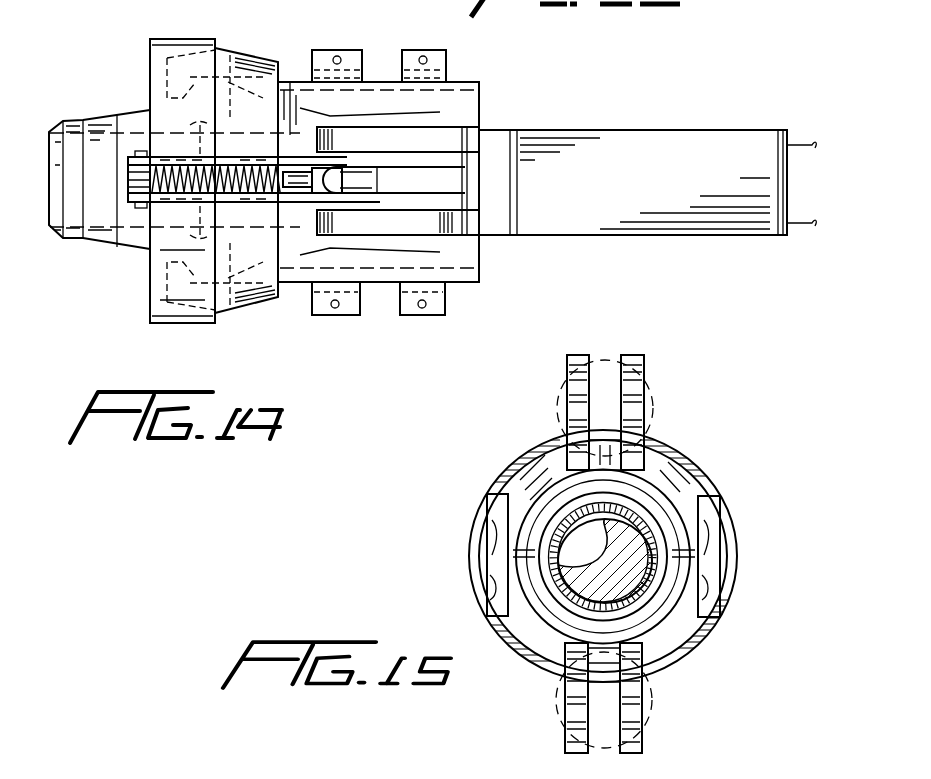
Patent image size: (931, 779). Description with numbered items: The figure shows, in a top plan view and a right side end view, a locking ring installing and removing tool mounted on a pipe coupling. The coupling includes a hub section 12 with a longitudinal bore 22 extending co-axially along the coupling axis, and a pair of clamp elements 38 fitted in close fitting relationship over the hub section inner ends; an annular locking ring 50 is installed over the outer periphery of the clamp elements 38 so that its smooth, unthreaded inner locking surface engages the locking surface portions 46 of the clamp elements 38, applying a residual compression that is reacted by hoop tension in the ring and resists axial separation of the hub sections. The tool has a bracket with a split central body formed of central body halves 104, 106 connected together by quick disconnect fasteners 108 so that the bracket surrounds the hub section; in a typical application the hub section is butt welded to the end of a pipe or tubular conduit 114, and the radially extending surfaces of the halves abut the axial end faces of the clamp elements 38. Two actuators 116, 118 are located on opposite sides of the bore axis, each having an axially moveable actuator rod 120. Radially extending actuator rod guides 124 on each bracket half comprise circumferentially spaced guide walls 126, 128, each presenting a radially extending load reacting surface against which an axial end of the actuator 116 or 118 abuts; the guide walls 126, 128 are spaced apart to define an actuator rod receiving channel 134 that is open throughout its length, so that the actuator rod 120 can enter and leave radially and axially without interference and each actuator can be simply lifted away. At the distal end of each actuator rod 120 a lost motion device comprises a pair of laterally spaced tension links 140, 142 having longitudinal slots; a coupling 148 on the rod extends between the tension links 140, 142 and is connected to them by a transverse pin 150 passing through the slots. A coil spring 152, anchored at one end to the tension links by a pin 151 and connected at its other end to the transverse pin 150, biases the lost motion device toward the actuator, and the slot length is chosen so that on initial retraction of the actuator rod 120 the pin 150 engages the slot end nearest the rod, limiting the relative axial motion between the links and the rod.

In FIG. 14, the hub section 12 is at (72, 118).
In FIG. 15, the longitudinal bore 22 is at (582, 533).
In FIG. 14, the clamp element 38 is at (280, 64).
In FIG. 15, the clamp element 38 is at (655, 478).
In FIG. 14, the locking surface portion 46 is at (222, 50).
In FIG. 14, the annular locking ring 50 is at (150, 40).
In FIG. 15, the annular locking ring 50 is at (680, 440).
In FIG. 14, the central body half 104 is at (472, 82).
In FIG. 15, the central body half 104 is at (660, 498).
In FIG. 15, the central body half 106 is at (650, 600).
In FIG. 14, the quick disconnect fastener 108 is at (418, 316).
In FIG. 15, the quick disconnect fastener 108 is at (735, 578).
In FIG. 15, the pipe or tubular conduit 114 is at (640, 580).
In FIG. 14, the actuator 116 is at (640, 130).
In FIG. 15, the actuator 116 is at (668, 406).
In FIG. 15, the actuator 118 is at (653, 714).
In FIG. 14, the actuator rod 120 is at (437, 173).
In FIG. 14, the actuator rod guide 124 is at (446, 225).
In FIG. 15, the actuator rod guide 124 is at (568, 352).
In FIG. 14, the guide wall 126 is at (415, 133).
In FIG. 15, the guide wall 126 is at (650, 374).
In FIG. 14, the guide wall 128 is at (415, 225).
In FIG. 15, the guide wall 128 is at (572, 372).
In FIG. 14, the actuator rod receiving channel 134 is at (395, 203).
In FIG. 15, the actuator rod receiving channel 134 is at (608, 352).
In FIG. 14, the tension link 140 is at (178, 158).
In FIG. 14, the tension link 142 is at (180, 203).
In FIG. 14, the coupling 148 is at (363, 180).
In FIG. 14, the transverse pin 150 is at (302, 157).
In FIG. 14, the pin 151 is at (140, 207).
In FIG. 14, the coil spring 152 is at (290, 184).